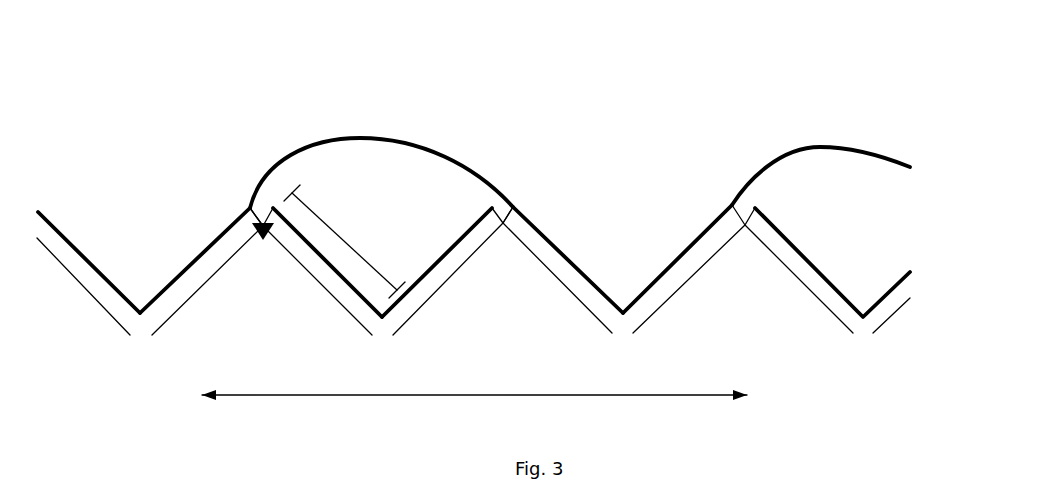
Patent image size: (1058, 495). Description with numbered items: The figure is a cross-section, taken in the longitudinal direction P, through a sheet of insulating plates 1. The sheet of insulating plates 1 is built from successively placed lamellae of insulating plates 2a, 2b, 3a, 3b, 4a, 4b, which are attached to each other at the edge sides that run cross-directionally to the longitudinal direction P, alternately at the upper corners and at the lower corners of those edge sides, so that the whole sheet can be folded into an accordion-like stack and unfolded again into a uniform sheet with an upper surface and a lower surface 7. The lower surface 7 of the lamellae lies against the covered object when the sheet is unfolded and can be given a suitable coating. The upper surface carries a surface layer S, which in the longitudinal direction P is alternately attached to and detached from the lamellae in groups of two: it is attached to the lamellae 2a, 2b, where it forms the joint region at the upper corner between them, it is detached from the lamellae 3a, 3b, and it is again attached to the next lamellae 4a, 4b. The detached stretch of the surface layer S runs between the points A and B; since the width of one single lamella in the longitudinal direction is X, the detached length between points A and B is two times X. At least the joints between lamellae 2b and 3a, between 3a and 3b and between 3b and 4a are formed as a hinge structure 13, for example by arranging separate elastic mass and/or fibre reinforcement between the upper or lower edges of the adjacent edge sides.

The sheet of insulating plates 1 is at (129, 128).
The lamella of insulating plates 2a is at (113, 307).
The lamella of insulating plates 2b is at (177, 295).
The lamella of insulating plates 3a is at (332, 295).
The lamella of insulating plates 3b is at (422, 292).
The lamella of insulating plates 4a is at (583, 293).
The lamella of insulating plates 4b is at (667, 282).
The lower surface 7 is at (817, 310).
The hinge structure 13 is at (256, 238).
The surface layer S is at (312, 140).
The point A is at (245, 204).
The point B is at (519, 203).
The width of one lamella X is at (344, 241).
The longitudinal direction P is at (474, 384).